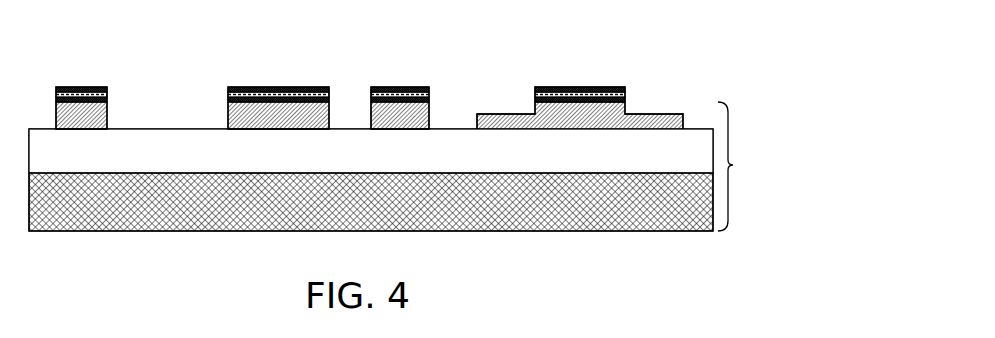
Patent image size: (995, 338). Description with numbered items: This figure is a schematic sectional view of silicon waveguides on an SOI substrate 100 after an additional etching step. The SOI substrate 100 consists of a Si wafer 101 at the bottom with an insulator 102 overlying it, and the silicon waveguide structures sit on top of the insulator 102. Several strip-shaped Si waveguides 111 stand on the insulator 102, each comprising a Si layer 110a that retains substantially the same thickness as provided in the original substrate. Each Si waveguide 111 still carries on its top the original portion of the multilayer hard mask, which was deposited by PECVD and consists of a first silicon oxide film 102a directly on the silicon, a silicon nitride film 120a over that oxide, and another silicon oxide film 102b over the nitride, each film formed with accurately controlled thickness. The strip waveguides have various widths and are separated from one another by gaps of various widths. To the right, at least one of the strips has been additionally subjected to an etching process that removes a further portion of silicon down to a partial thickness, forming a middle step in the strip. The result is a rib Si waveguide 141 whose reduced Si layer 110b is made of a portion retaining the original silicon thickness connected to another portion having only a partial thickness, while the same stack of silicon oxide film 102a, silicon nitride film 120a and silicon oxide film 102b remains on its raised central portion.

The SOI substrate 100 is at (398, 166).
The Si wafer 101 is at (345, 222).
The insulator 102 is at (470, 162).
The first silicon oxide film 102a is at (107, 100).
The silicon oxide film 102b is at (107, 88).
The silicon nitride film 120a is at (107, 94).
The Si layer 110a is at (92, 122).
The reduced Si layer 110b is at (620, 122).
The Si waveguide 111 is at (69, 76).
The rib Si waveguide 141 is at (568, 78).